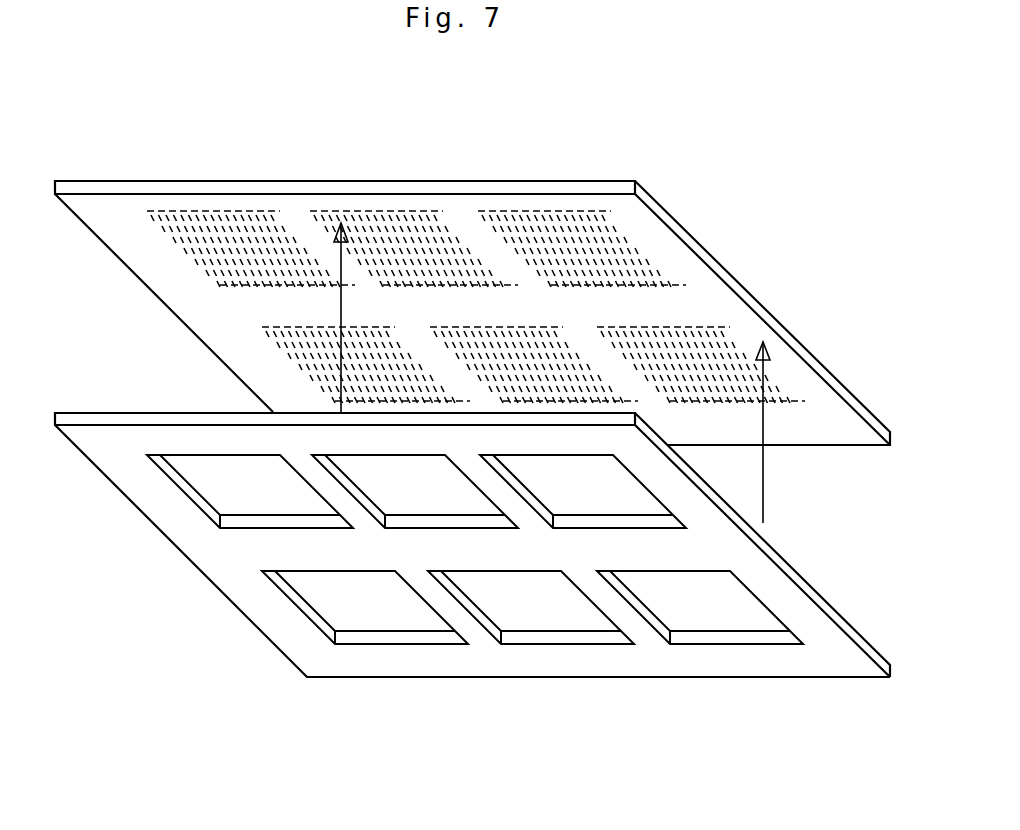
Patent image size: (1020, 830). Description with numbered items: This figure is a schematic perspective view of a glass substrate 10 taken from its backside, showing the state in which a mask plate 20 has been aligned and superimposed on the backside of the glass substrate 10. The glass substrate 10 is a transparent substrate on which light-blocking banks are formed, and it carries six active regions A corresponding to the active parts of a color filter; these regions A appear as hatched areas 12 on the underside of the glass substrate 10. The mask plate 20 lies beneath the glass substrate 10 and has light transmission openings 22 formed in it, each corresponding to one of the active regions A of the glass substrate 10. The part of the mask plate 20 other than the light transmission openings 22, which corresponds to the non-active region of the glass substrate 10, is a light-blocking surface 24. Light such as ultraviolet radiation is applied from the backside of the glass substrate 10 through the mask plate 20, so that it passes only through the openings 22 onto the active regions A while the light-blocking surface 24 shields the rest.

The glass substrate 10 is at (720, 270).
The hatched bonding regions 12 is at (208, 213).
The active region A is at (176, 250).
The mask plate 20 is at (465, 614).
The light transmission opening 22 is at (200, 456).
The light-blocking surface 24 is at (235, 558).